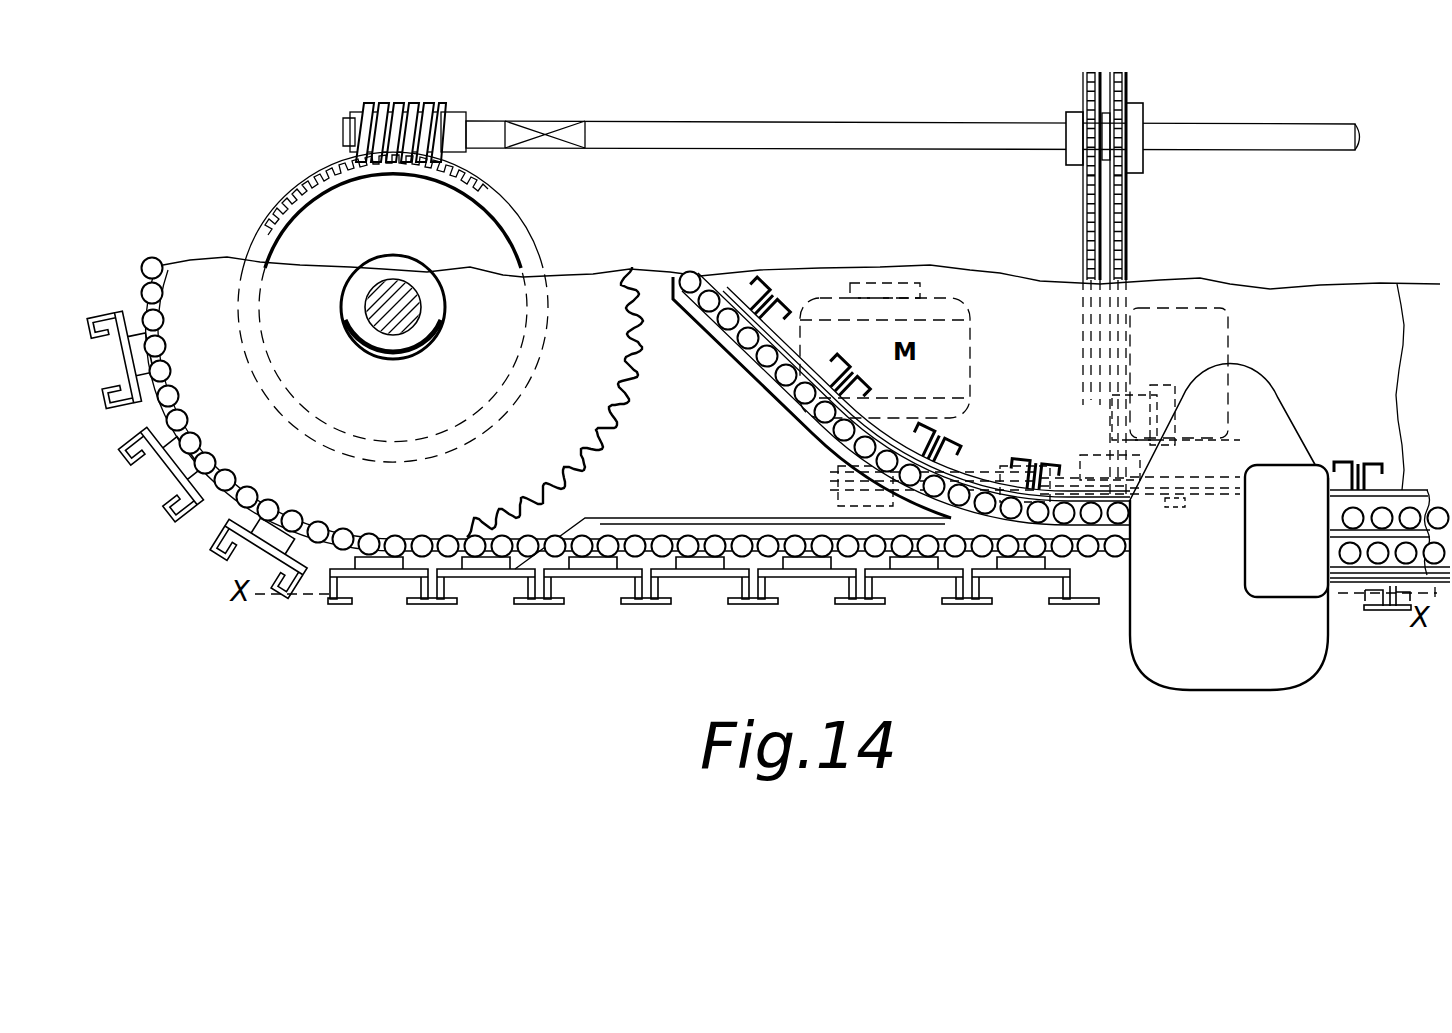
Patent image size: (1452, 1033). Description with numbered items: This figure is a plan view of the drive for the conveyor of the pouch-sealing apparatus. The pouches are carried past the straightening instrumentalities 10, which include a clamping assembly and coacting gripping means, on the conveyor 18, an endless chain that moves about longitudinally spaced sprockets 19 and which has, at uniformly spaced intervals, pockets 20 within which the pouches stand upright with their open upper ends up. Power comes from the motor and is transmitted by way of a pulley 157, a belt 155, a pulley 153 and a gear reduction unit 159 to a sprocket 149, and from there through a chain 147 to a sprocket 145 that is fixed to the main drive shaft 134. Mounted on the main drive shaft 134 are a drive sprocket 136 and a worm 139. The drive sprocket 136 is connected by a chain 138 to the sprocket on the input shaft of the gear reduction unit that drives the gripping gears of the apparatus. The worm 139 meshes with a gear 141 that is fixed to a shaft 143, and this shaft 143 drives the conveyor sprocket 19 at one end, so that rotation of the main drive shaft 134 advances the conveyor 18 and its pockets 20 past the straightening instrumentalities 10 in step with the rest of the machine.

The straightening instrumentalities 10 is at (1283, 397).
The conveyor 18 is at (700, 276).
The sprocket 19 is at (632, 398).
The pocket 20 is at (350, 603).
The main drive shaft 134 is at (838, 122).
The drive sprocket 136 is at (1128, 88).
The chain 138 is at (1128, 226).
The worm 139 is at (401, 104).
The gear 141 is at (292, 196).
The shaft 143 is at (410, 327).
The sprocket 145 is at (1081, 90).
The chain 147 is at (1083, 232).
The sprocket 149 is at (1080, 326).
The pulley 153 is at (1220, 500).
The belt 155 is at (1078, 478).
The pulley 157 is at (840, 493).
The gear reduction unit 159 is at (1228, 330).